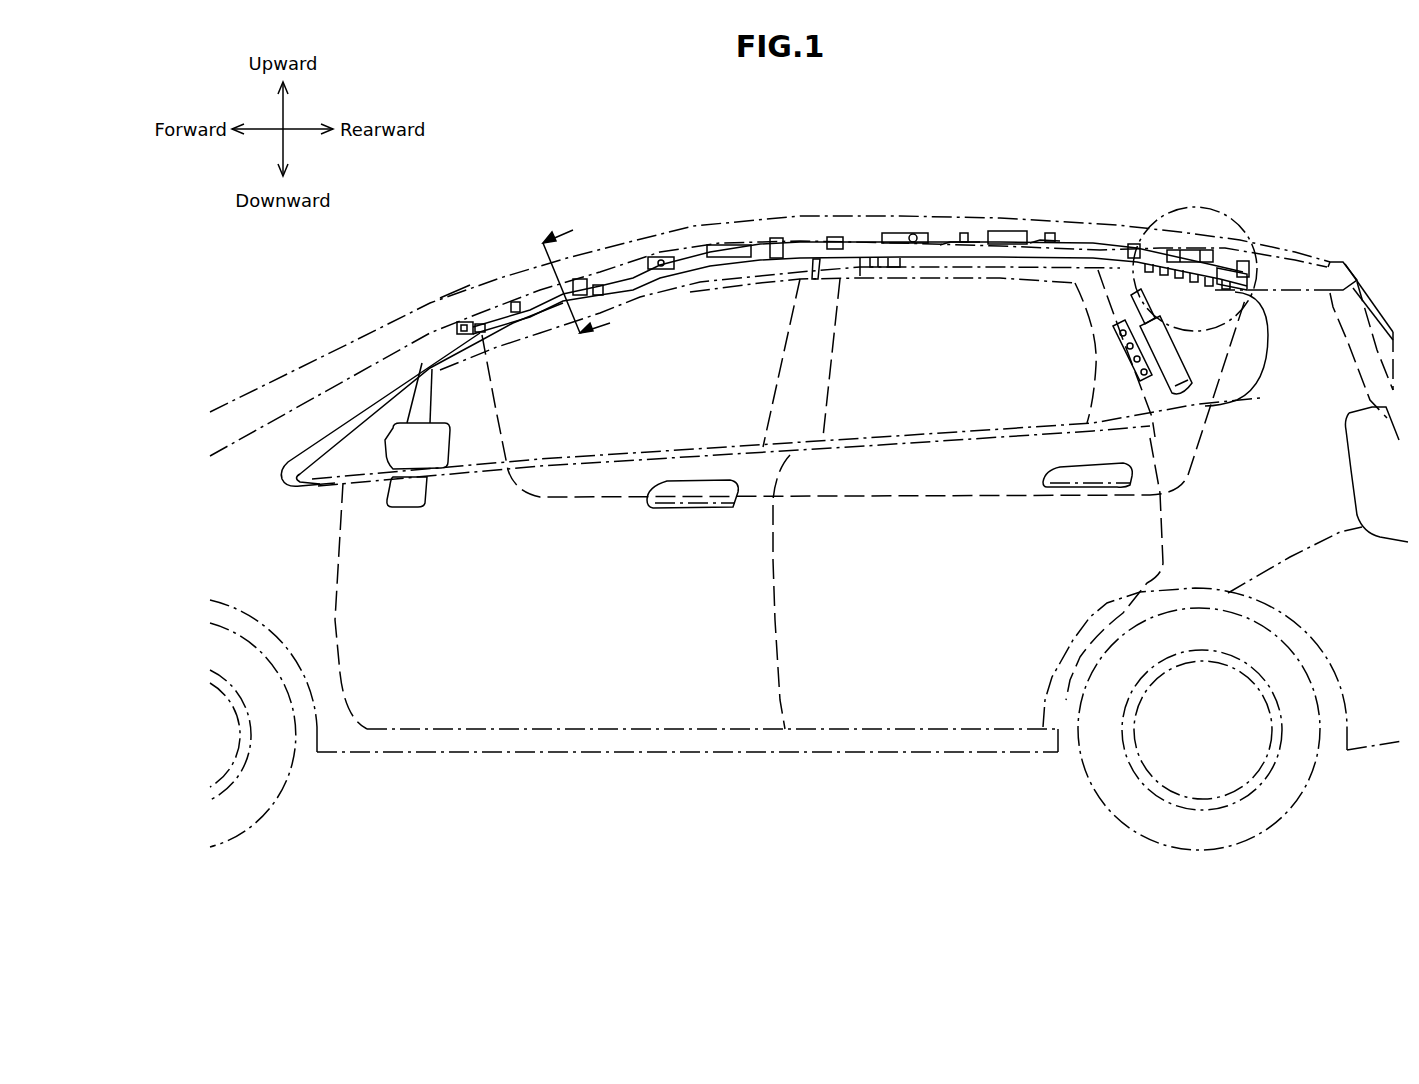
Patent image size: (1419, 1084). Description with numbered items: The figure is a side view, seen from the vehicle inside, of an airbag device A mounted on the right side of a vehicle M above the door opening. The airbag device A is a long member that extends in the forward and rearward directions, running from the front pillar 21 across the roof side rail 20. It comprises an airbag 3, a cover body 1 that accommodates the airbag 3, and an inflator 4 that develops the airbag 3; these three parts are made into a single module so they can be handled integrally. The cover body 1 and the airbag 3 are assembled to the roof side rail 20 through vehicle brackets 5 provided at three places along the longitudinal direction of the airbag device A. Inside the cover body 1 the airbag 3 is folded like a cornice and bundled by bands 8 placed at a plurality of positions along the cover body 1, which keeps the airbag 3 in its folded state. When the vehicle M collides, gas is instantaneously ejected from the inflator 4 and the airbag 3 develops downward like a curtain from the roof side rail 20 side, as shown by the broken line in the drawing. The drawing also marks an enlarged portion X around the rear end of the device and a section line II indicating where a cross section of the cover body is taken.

The cover body 1 is at (628, 244).
The airbag 3 is at (663, 285).
The inflator 4 is at (1175, 360).
The vehicle bracket 5 is at (660, 255).
The band 8 is at (599, 278).
The roof side rail 20 is at (1017, 218).
The front pillar 21 is at (357, 388).
The airbag device A is at (817, 230).
The vehicle M is at (455, 300).
The enlarged portion X is at (1175, 203).
The section line II- II is at (579, 283).